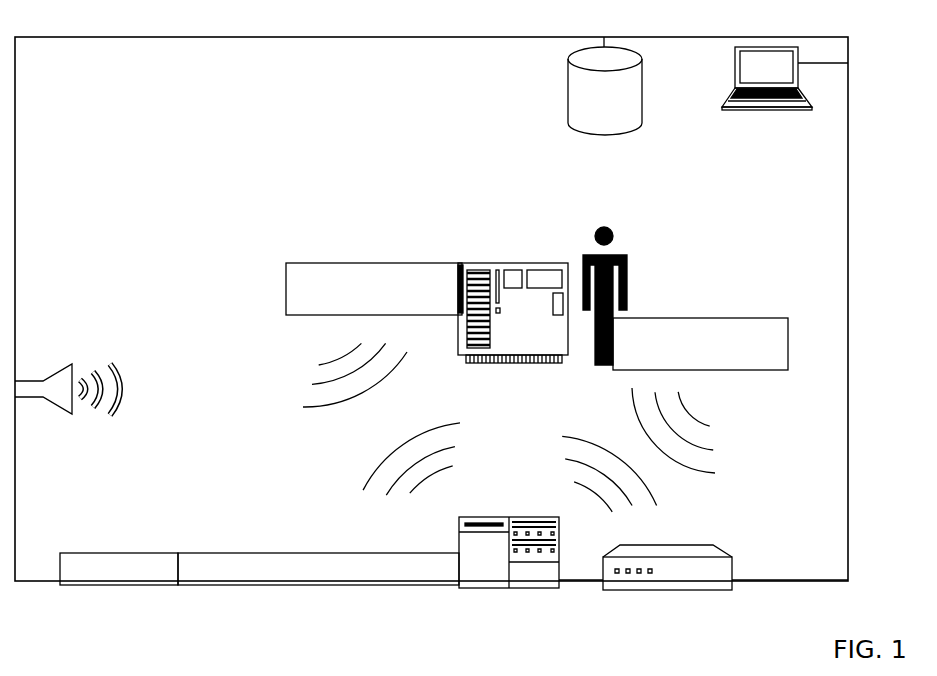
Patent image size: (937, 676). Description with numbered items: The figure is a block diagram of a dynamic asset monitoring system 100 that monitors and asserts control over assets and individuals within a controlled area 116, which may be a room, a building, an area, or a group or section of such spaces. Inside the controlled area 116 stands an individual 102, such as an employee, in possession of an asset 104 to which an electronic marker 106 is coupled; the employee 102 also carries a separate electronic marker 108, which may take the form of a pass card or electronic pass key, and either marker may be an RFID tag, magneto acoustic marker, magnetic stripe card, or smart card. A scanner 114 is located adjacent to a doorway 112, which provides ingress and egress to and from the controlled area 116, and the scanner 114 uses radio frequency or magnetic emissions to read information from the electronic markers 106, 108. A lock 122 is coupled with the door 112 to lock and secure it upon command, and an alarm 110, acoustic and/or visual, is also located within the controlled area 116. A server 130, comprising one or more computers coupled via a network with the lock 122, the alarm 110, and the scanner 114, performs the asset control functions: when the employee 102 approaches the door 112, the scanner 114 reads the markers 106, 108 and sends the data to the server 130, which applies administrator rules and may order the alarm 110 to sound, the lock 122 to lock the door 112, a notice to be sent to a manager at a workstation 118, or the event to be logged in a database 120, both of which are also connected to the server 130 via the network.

The dynamic asset monitoring system 100 is at (687, 37).
The individual 102 is at (622, 236).
The asset 104 is at (513, 333).
The electronic marker 106 is at (374, 335).
The electronic marker 108 is at (700, 395).
The alarm 110 is at (67, 409).
The doorway 112 is at (318, 569).
The scanner 114 is at (509, 525).
The controlled area 116 is at (185, 74).
The workstation 118 is at (754, 92).
The database 120 is at (605, 86).
The lock 122 is at (119, 569).
The server 130 is at (703, 576).